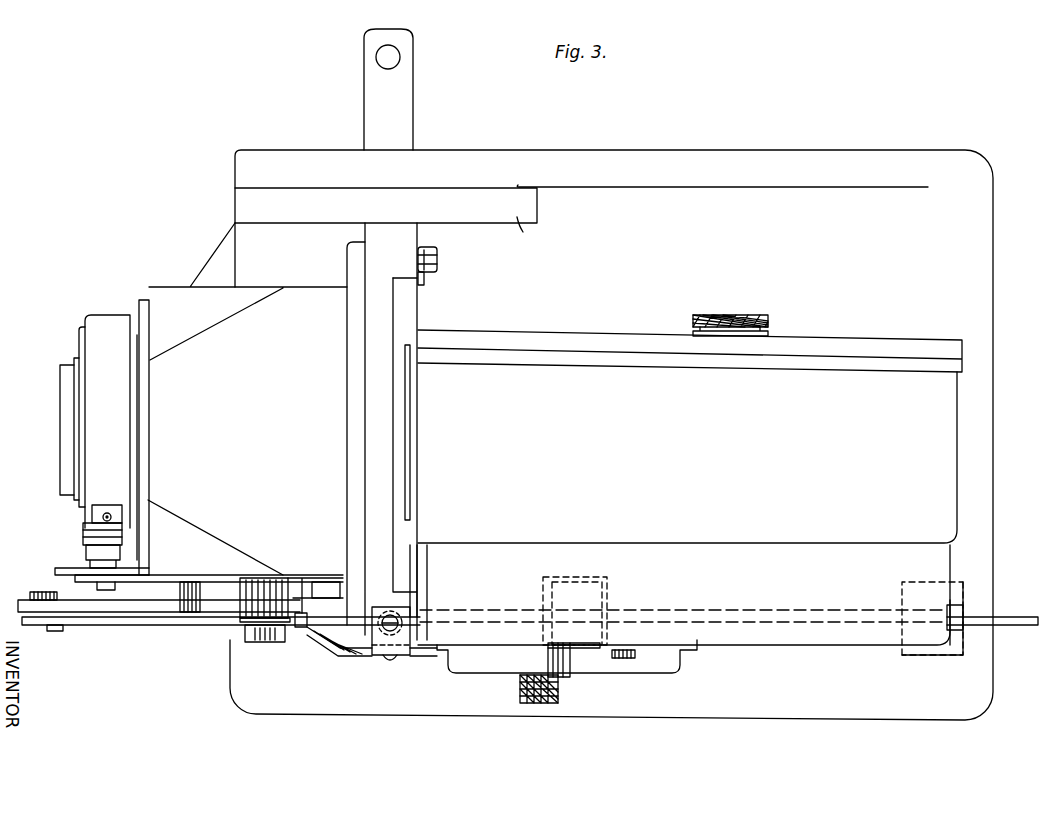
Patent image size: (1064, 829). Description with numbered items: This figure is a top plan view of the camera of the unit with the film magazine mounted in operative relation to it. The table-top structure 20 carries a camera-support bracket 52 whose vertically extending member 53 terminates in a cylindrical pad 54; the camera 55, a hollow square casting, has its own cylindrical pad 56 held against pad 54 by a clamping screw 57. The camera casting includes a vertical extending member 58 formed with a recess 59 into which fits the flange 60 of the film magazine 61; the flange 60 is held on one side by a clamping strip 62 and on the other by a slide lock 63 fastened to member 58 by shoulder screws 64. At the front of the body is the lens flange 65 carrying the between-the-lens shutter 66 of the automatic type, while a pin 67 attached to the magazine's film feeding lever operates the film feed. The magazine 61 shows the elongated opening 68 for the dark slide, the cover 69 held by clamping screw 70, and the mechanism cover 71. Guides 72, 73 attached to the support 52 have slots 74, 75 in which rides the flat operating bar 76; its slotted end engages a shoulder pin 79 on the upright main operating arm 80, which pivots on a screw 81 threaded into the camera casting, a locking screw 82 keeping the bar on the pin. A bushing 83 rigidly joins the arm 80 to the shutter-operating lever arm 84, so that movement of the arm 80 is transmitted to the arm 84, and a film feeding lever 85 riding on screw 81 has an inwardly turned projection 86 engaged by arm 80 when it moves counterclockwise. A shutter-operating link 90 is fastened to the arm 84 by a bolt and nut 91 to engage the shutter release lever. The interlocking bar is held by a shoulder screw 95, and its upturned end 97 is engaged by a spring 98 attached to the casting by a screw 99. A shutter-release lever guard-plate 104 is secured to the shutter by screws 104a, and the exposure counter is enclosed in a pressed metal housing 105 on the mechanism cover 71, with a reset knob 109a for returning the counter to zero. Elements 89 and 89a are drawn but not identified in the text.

The table-top structure 20 is at (1000, 490).
The camera-support bracket 52 is at (982, 291).
The vertically extending member 53 is at (667, 178).
The cylindrical pad 54 is at (465, 160).
The camera 55 is at (193, 358).
The cylindrical pad 56 is at (519, 234).
The clamping screw 57 is at (401, 79).
The vertical extending member 58 is at (362, 262).
The recess 59 is at (395, 357).
The flange 60 is at (415, 325).
The film magazine 61 is at (935, 437).
The clamping strip 62 is at (413, 594).
The slide lock 63 is at (424, 280).
The shoulder screws 64 is at (437, 258).
The lens flange 65 is at (145, 298).
The between-the-lens shutter 66 is at (103, 330).
The pin 67 is at (572, 662).
The elongated opening 68 is at (410, 445).
The cover 69 is at (870, 340).
The clamping screw 70 is at (735, 323).
The mechanism cover 71 is at (862, 640).
The guide 72 is at (590, 595).
The guide 73 is at (952, 660).
The slot 74 is at (540, 610).
The slot 75 is at (968, 607).
The operating bar 76 is at (145, 622).
The shoulder pin 79 is at (42, 592).
The main operating arm 80 is at (107, 614).
The screw 81 is at (262, 645).
The locking screw 82 is at (55, 633).
The bushing 83 is at (256, 602).
The shutter-operating lever arm 84 is at (171, 578).
The film feeding lever 85 is at (437, 654).
The inwardly turned projection 86 is at (300, 628).
The block 89 is at (388, 615).
The notch 89a is at (390, 662).
The shutter-operating link 90 is at (70, 570).
The bolt and nut 91 is at (115, 588).
The shoulder screw 95 is at (185, 614).
The upturned end 97 is at (330, 596).
The spring 98 is at (333, 582).
The screw 99 is at (306, 582).
The shutter-release lever guard-plate 104 is at (83, 538).
The screws 104a is at (105, 508).
The pressed metal housing 105 is at (700, 656).
The reset knob 109a is at (558, 695).